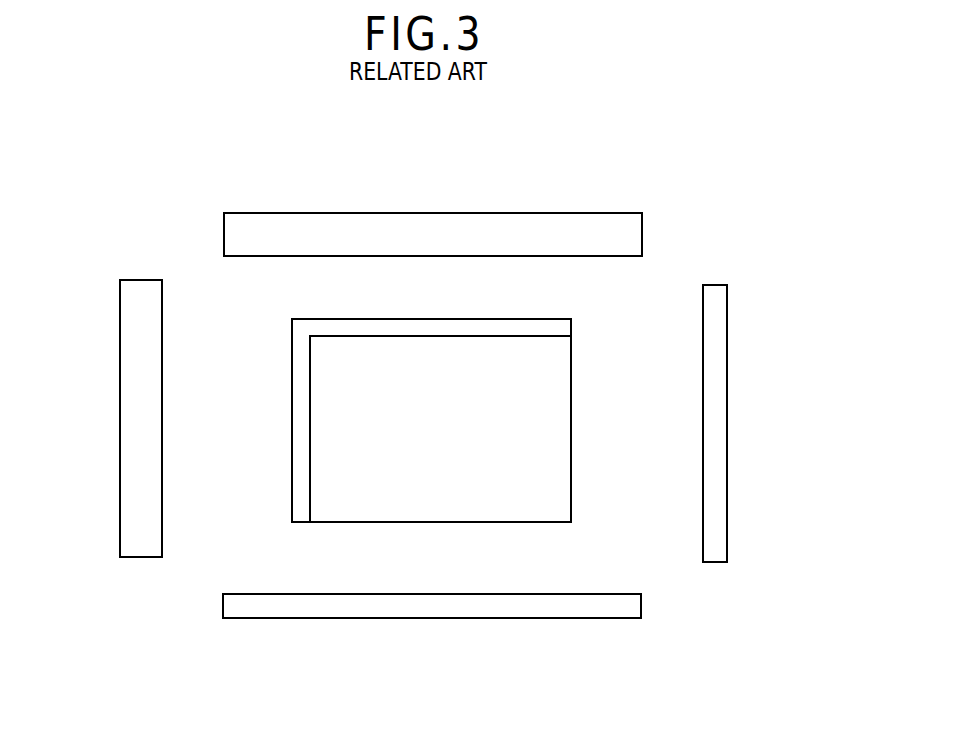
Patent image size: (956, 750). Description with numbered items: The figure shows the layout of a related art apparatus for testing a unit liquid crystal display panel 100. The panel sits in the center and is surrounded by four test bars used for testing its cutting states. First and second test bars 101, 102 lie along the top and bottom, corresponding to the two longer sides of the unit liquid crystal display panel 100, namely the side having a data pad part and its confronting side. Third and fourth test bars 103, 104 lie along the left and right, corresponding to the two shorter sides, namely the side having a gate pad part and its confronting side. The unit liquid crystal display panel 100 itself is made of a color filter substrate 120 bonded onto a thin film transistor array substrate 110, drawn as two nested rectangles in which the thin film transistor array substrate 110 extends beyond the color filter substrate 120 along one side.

The unit liquid crystal display panel 100 is at (370, 420).
The first test bar 101 is at (431, 212).
The second test bar 102 is at (428, 618).
The third test bar 103 is at (120, 419).
The fourth test bar 104 is at (727, 421).
The thin film transistor array substrate 110 is at (292, 380).
The color filter substrate 120 is at (330, 430).